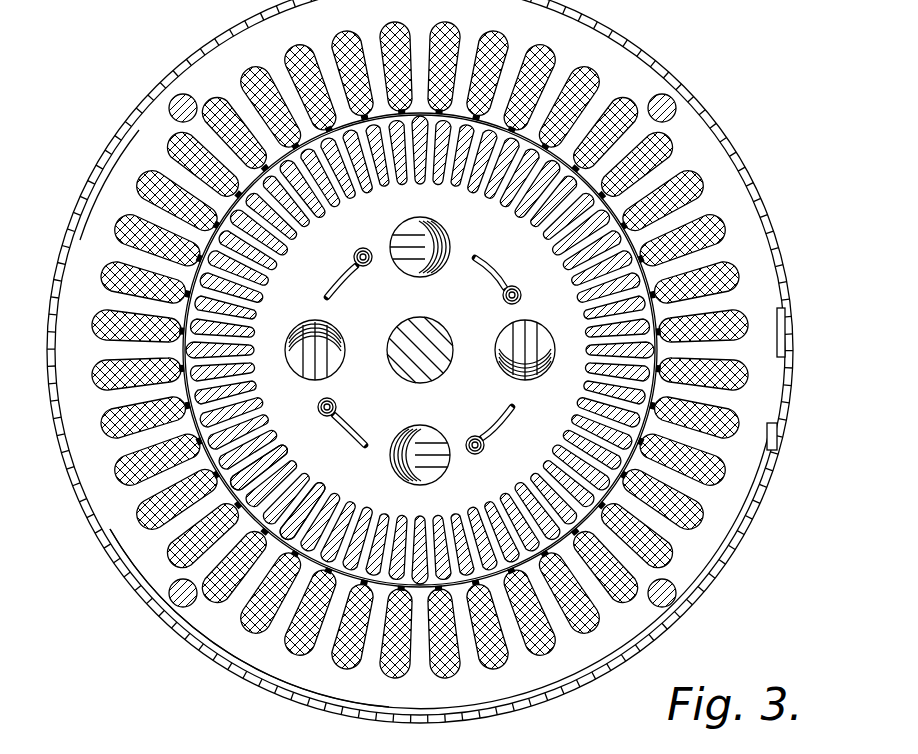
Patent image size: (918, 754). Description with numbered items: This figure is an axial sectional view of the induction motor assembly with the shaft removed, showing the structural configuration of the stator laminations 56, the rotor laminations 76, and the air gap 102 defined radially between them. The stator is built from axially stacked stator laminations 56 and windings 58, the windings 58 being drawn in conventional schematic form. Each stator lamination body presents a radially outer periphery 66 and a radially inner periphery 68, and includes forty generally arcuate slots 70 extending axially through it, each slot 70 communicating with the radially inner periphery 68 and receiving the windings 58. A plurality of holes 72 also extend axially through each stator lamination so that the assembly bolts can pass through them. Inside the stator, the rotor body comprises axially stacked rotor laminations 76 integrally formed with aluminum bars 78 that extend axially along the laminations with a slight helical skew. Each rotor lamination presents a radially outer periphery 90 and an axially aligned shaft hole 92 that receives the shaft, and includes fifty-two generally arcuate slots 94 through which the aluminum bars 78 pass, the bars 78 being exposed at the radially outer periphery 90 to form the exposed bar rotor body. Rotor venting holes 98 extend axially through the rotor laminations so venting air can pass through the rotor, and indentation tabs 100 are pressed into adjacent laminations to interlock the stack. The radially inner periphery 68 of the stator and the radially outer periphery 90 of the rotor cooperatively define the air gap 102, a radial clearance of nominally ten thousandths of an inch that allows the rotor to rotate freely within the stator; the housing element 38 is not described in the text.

The housing shell 38 is at (752, 517).
The stator laminations 56 is at (693, 155).
The windings 58 is at (137, 472).
The radially outer periphery 66 is at (120, 137).
The radially inner periphery 68 is at (268, 148).
The slots 70 is at (148, 540).
The holes 72 is at (675, 603).
The rotor laminations 76 is at (500, 220).
The aluminum bars 78 is at (300, 505).
The radially outer periphery 90 is at (300, 165).
The shaft hole 92 is at (423, 365).
The slots 94 is at (267, 483).
The rotor venting holes 98 is at (312, 330).
The indentation tabs 100 is at (342, 277).
The air gap 102 is at (657, 390).